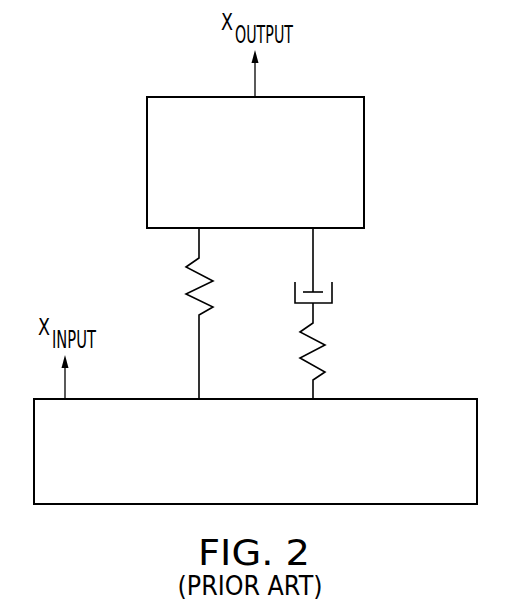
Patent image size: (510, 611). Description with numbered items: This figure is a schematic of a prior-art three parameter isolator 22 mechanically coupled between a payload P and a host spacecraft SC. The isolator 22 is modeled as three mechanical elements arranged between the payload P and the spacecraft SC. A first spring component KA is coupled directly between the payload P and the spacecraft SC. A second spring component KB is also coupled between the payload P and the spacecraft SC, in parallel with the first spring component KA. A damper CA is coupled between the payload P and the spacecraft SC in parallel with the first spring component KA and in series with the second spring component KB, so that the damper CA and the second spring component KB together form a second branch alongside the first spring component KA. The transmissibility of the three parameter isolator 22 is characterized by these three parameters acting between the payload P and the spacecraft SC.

The three parameter isolator 22 is at (297, 313).
The first spring component KA is at (185, 313).
The damper CA is at (327, 271).
The second spring component KB is at (328, 351).
The payload P is at (255, 162).
The spacecraft SC is at (255, 451).